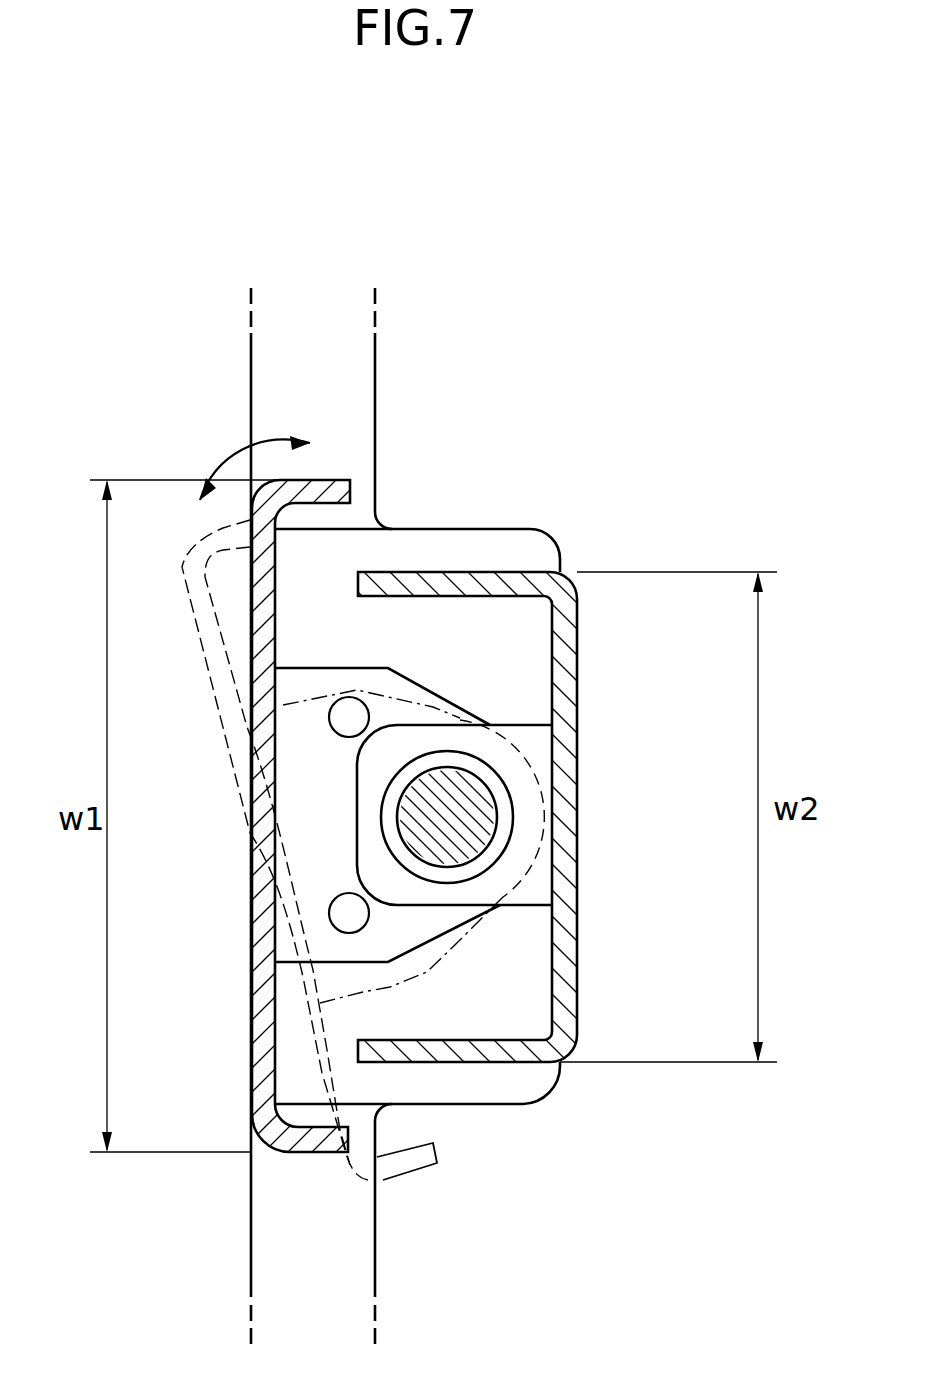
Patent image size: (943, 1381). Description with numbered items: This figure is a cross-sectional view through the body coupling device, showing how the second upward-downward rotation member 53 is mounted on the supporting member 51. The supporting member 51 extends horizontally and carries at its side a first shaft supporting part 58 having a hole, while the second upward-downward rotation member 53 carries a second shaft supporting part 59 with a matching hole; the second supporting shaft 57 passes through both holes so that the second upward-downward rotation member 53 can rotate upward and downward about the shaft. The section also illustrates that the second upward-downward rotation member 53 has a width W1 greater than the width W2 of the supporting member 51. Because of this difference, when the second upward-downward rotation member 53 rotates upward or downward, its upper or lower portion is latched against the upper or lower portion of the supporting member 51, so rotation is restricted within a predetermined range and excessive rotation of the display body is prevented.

The supporting member 51 is at (568, 665).
The second upward-downward rotation member 53 is at (250, 758).
The second supporting shaft 57 is at (452, 790).
The first shaft supporting part 58 is at (542, 748).
The second shaft supporting part 59 is at (325, 668).